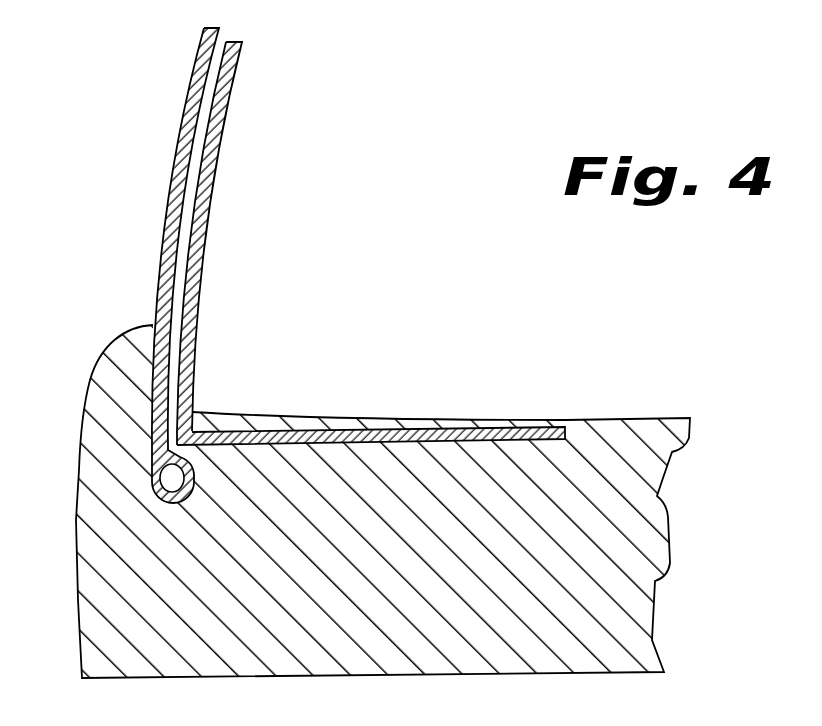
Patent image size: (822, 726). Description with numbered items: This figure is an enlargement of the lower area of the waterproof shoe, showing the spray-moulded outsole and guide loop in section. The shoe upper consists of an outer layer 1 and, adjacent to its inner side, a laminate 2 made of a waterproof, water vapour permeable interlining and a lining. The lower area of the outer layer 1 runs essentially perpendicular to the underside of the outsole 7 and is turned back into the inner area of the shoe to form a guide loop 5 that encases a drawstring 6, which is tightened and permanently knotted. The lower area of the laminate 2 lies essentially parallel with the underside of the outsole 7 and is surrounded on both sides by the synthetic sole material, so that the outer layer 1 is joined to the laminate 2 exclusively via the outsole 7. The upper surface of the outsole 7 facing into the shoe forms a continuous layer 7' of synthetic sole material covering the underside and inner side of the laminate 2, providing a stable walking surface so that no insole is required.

The outer layer 1 is at (172, 153).
The laminate 2 is at (208, 180).
The guide loop 5 is at (150, 460).
The drawstring 6 is at (167, 481).
The outsole 7 is at (398, 501).
The layer of synthetic sole material 7' is at (414, 379).